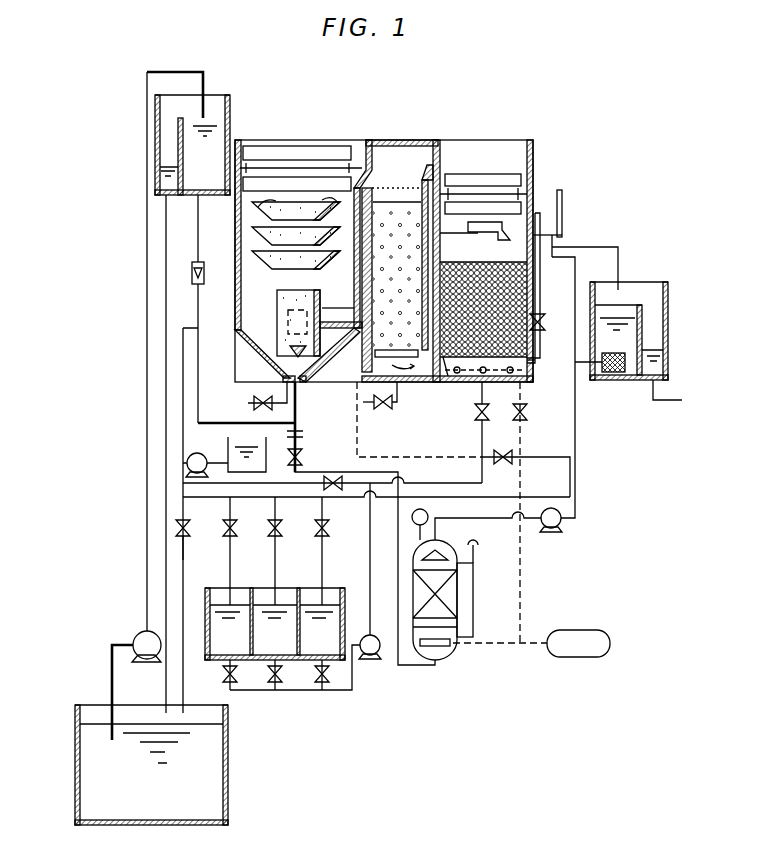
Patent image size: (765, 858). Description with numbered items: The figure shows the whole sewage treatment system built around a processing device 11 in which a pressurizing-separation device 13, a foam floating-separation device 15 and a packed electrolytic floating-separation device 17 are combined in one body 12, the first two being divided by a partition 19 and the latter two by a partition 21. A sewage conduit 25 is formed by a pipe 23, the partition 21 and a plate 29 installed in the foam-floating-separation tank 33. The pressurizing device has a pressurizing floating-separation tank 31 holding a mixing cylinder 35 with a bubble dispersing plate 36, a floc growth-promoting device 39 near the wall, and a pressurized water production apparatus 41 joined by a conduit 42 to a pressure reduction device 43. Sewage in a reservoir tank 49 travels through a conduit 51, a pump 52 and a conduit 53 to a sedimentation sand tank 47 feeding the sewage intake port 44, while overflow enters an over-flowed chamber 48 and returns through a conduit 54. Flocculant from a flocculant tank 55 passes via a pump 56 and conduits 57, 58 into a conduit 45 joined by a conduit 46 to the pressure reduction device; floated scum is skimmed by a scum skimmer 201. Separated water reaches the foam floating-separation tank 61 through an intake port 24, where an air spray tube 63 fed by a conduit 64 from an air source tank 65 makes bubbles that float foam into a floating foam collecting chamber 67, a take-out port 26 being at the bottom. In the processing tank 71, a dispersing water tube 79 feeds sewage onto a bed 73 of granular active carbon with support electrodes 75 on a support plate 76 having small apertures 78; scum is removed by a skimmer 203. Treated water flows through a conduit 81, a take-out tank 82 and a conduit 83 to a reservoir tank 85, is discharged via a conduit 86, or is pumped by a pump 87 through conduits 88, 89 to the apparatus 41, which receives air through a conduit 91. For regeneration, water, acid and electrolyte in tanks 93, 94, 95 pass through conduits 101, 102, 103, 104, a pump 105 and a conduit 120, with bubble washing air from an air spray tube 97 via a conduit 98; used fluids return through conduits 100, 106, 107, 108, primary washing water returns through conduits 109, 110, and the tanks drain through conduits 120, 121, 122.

The processing device 11 is at (601, 130).
The body 12 is at (242, 142).
The pressurizing-separation device 13 is at (216, 224).
The foam floating-separation device 15 is at (406, 255).
The packed electrolytic floating-separation device 17 is at (472, 233).
The partition 19 is at (354, 318).
The partition 21 is at (422, 314).
The pipe 23 is at (355, 298).
The intake port 24 is at (372, 187).
The sewage conduit 25 is at (422, 272).
The take-out port 26 is at (400, 418).
The plate 29 is at (421, 208).
The pressurizing floating-separation tank 31 is at (243, 152).
The foam-floating-separation tank 33 is at (369, 146).
The mixing cylinder 35 is at (277, 300).
The bubble dispersing plate 36 is at (289, 351).
The floc growth-promoting device 39 is at (222, 257).
The pressurized water production apparatus 41 is at (452, 652).
The conduit 42 is at (418, 666).
The pressure reduction device 43 is at (280, 522).
The sewage intake port 44 is at (298, 398).
The conduit 45 is at (198, 300).
The conduit 46 is at (302, 457).
The sedimentation sand tank 47 is at (240, 98).
The over-flowed chamber 48 is at (154, 128).
The reservoir tank 49 is at (230, 780).
The conduit 51 is at (111, 668).
The pump 52 is at (135, 636).
The conduit 53 is at (146, 521).
The conduit 54 is at (165, 292).
The flocculant tank 55 is at (250, 523).
The pump 56 is at (187, 467).
The conduit 57 is at (229, 447).
The conduit 58 is at (182, 369).
The foam floating-separation tank 61 is at (438, 386).
The air spray tube 63 is at (388, 350).
The conduit 64 is at (370, 458).
The air source tank 65 is at (583, 657).
The floating foam collecting chamber 67 is at (434, 147).
The processing tank 71 is at (545, 150).
The bed of granular active carbon 73 is at (541, 333).
The support electrodes 75 is at (546, 292).
The support plate 76 is at (480, 394).
The small apertures 78 is at (531, 413).
The dispersing water tube 79 is at (488, 228).
The conduit 81 is at (537, 367).
The take-out tank 82 is at (563, 202).
The conduit 83 is at (622, 250).
The reservoir tank 85 is at (668, 304).
The conduit 86 is at (656, 402).
The pump 87 is at (562, 526).
The conduit 88 is at (577, 450).
The conduit 89 is at (502, 519).
The conduit 91 is at (538, 645).
The tank 93 is at (275, 624).
The tank 94 is at (273, 621).
The tank 95 is at (321, 624).
The air spray tube 97 is at (496, 412).
The conduit 98 is at (522, 440).
The conduit 100 is at (571, 470).
The conduit 101 is at (234, 680).
The conduit 102 is at (279, 680).
The conduit 103 is at (326, 680).
The conduit 104 is at (354, 692).
The pump 105 is at (374, 659).
The conduit 106 is at (236, 543).
The conduit 107 is at (281, 543).
The conduit 108 is at (328, 543).
The conduit 109 is at (192, 498).
The conduit 110 is at (186, 543).
The conduit 120 is at (481, 443).
The conduit 121 is at (386, 410).
The conduit 122 is at (265, 401).
The scum skimmer 201 is at (318, 147).
The skimmer 203 is at (468, 174).